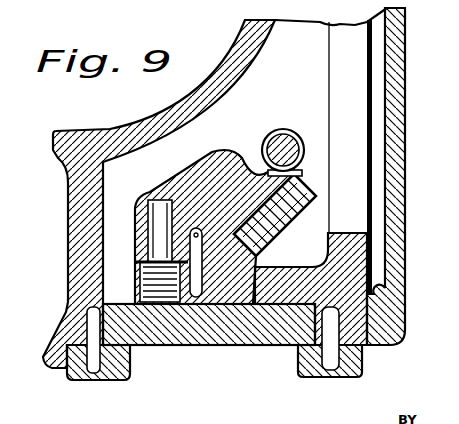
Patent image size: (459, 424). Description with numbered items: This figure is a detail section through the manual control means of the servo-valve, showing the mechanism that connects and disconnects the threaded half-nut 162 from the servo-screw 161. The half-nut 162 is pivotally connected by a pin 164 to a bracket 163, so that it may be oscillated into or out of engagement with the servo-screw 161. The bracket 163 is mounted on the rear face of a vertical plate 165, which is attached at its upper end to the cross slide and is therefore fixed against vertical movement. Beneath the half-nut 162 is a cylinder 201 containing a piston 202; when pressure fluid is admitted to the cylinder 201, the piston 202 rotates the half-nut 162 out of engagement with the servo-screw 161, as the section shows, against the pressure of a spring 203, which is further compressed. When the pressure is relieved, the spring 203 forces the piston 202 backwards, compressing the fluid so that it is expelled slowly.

The servo-screw 161 is at (310, 112).
The half-nut 162 is at (302, 173).
The bracket 163 is at (236, 250).
The pin 164 is at (237, 158).
The vertical plate 165 is at (176, 346).
The cylinder 201 is at (137, 278).
The piston 202 is at (157, 222).
The spring 203 is at (286, 232).